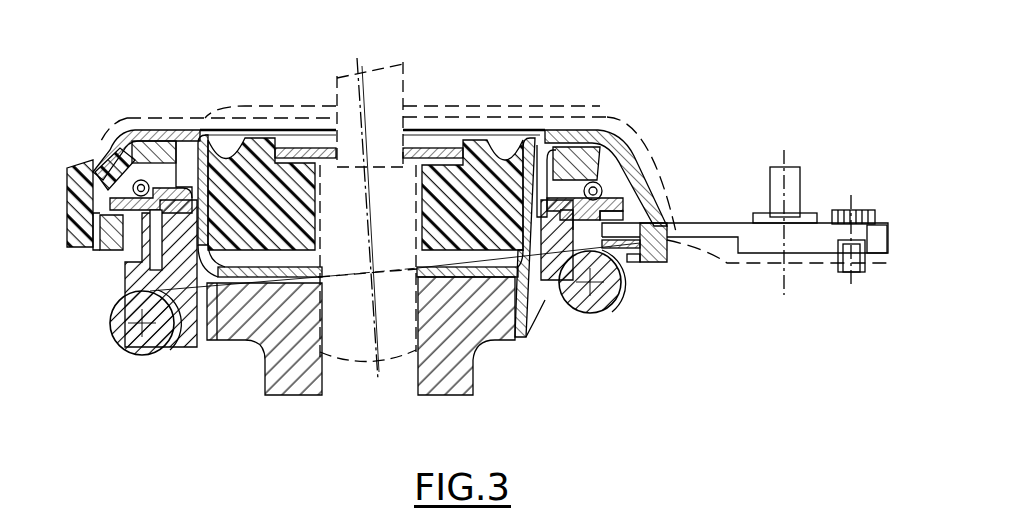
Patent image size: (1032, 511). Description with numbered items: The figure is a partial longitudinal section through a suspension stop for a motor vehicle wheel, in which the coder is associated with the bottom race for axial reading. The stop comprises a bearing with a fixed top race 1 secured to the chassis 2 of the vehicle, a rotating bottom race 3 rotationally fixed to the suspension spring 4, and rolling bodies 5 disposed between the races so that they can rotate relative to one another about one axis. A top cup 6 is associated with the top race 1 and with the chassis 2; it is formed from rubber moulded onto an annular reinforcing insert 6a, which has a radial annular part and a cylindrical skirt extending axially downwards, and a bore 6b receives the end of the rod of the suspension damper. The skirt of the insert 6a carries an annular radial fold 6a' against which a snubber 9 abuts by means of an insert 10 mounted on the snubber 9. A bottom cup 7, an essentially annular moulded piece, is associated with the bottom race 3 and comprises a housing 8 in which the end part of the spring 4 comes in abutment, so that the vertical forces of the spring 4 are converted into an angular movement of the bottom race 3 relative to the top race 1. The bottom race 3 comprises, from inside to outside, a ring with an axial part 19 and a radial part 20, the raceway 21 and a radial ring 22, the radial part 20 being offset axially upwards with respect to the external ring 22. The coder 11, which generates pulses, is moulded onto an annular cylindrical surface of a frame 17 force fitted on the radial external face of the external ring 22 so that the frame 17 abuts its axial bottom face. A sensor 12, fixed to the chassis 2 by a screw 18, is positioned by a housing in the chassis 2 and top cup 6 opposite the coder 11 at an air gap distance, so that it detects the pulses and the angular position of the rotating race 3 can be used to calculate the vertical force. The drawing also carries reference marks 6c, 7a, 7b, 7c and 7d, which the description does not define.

The top race 1 is at (128, 176).
The chassis 2 is at (468, 110).
The bottom race 3 is at (125, 268).
The suspension spring 4 is at (170, 347).
The rolling bodies 5 is at (110, 165).
The top cup 6 is at (267, 137).
The annular reinforcing insert 6a is at (325, 94).
The annular radial fold 6a' is at (360, 334).
The bore 6b is at (338, 372).
The hub bracket 6c is at (633, 264).
The bottom cup 7 is at (112, 297).
The bearing inner race 7a is at (570, 320).
The bearing ball 7b is at (603, 303).
The bearing outer race 7c is at (547, 313).
The bearing retainer 7d is at (628, 264).
The housing 8 is at (153, 343).
The snubber 9 is at (288, 355).
The insert 10 is at (245, 342).
The coder 11 is at (108, 218).
The sensor 12 is at (713, 227).
The frame 17 is at (67, 172).
The screw 18 is at (838, 210).
The axial part 19 is at (548, 185).
The radial part 20 is at (562, 186).
The raceway 21 is at (612, 138).
The radial ring 22 is at (640, 172).